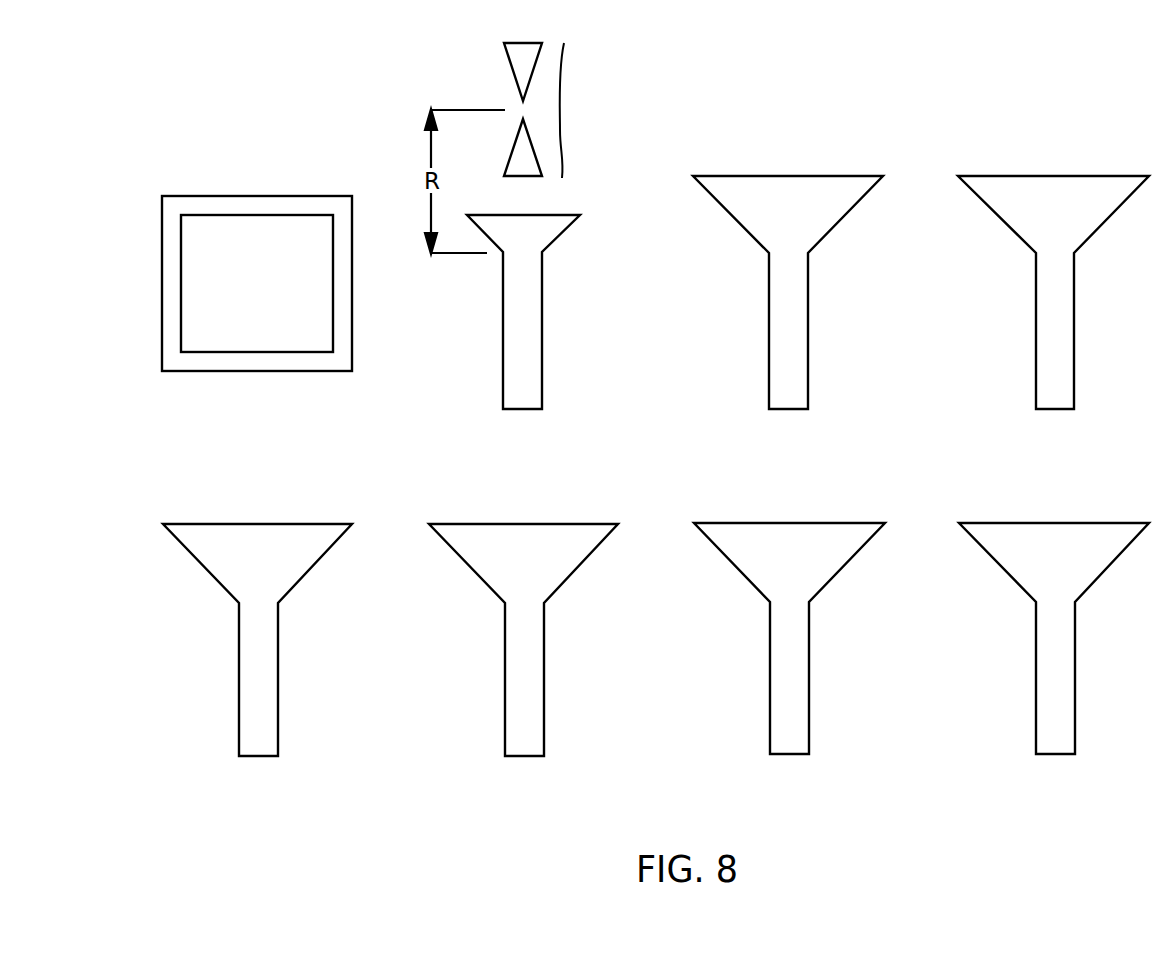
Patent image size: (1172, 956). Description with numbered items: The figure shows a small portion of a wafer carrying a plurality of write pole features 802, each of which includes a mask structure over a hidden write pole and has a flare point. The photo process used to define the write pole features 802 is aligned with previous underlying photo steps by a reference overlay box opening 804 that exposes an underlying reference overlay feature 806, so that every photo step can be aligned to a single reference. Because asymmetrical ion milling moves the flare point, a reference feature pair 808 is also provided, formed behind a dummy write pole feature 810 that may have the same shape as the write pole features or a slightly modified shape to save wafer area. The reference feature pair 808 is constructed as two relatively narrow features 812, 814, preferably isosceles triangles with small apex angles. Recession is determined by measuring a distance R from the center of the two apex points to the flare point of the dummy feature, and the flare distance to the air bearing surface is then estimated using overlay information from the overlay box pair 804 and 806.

The write pole feature 802 is at (757, 175).
The reference overlay box opening 804 is at (354, 324).
The reference overlay feature 806 is at (242, 215).
The reference feature pair 808 is at (536, 105).
The dummy write pole feature 810 is at (543, 302).
The narrow feature 812 is at (505, 150).
The narrow feature 814 is at (505, 62).